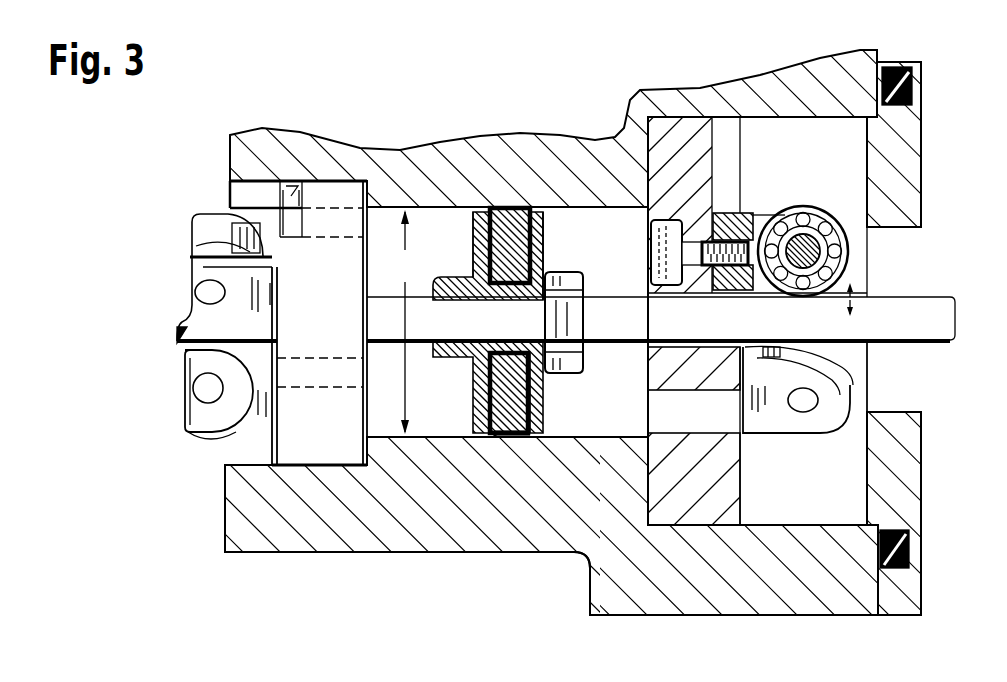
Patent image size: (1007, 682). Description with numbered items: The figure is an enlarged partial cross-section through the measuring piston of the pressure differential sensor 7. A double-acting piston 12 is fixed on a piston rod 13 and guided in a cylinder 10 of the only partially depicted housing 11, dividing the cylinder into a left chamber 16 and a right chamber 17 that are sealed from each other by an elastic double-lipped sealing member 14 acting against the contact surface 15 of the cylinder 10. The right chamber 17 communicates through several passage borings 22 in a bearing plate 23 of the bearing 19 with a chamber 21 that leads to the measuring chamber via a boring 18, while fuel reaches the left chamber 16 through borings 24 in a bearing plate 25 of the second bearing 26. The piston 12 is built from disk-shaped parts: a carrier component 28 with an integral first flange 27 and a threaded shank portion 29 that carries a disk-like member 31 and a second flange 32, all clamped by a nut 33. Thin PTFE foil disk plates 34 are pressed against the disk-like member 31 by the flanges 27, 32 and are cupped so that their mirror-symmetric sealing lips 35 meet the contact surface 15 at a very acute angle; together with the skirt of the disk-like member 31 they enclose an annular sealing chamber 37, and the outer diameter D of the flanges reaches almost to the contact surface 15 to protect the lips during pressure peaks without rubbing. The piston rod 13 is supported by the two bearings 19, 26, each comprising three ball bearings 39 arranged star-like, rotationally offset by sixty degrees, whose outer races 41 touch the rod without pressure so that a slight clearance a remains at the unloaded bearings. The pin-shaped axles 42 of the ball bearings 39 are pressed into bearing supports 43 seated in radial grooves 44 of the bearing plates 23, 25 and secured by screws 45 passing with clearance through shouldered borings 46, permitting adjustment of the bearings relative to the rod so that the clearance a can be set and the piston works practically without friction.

The pressure differential sensor 7 is at (452, 562).
The cylinder 10 is at (378, 444).
The housing 11 is at (597, 574).
The double-acting piston 12 is at (556, 252).
The piston rod 13 is at (747, 333).
The double-lipped sealing member 14 is at (493, 439).
The contact surface 15 is at (605, 432).
The left chamber 16 is at (377, 228).
The right chamber 17 is at (631, 223).
The boring 18 is at (905, 230).
The bearing 19 is at (746, 213).
The chamber 21 is at (827, 503).
The passage borings 22 is at (667, 433).
The bearing plate 23 is at (727, 468).
The borings 24 is at (322, 384).
The bearing plate 25 is at (330, 423).
The second bearing 26 is at (226, 181).
The first abutment flange 27 is at (472, 228).
The carrier component 28 is at (478, 285).
The threaded shank portion 29 is at (533, 285).
The disk-like member 31 is at (509, 210).
The second flange 32 is at (543, 250).
The nut 33 is at (586, 296).
The disk plates 34 is at (478, 395).
The sealing lips 35 is at (527, 440).
The annular sealing chamber 37 is at (503, 440).
The ball bearings 39 is at (215, 228).
The outer races 41 is at (815, 222).
The pin-shaped axles 42 is at (213, 293).
The bearing supports 43 is at (216, 212).
The radial grooves 44 is at (302, 197).
The screws 45 is at (671, 220).
The shouldered borings 46 is at (683, 238).
The outer diameter D is at (405, 322).
The clearance a is at (855, 295).